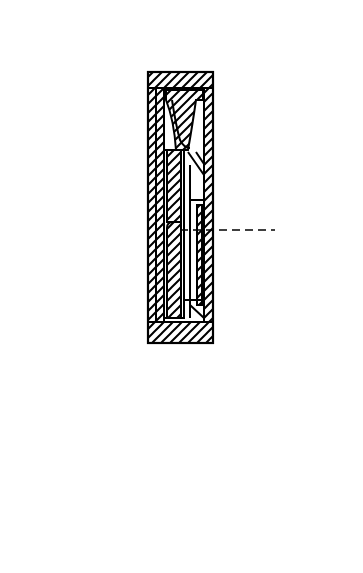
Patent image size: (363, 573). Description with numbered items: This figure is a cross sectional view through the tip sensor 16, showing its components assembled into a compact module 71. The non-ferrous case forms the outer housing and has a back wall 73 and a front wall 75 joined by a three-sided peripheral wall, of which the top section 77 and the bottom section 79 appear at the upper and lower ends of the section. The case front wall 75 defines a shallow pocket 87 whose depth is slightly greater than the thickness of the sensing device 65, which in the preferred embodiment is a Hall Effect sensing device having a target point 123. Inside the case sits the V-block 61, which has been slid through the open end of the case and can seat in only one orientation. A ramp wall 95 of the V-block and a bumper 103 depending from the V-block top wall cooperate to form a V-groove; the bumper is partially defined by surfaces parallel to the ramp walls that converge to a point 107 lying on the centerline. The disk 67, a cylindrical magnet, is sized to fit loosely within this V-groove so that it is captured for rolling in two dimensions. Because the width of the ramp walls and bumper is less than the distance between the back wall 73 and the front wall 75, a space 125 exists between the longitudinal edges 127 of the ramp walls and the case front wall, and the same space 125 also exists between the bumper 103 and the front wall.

The tip sensor 16 is at (118, 200).
The V-block 61 is at (148, 298).
The sensing device 65 is at (212, 270).
The disk 67 is at (168, 260).
The compact module 71 is at (205, 67).
The back wall 73 is at (168, 93).
The front wall 75 is at (207, 113).
The top section 77 is at (152, 74).
The bottom section 79 is at (196, 325).
The shallow pocket 87 is at (210, 197).
The ramp wall 95 is at (149, 215).
The bumper 103 is at (174, 126).
The point 107 is at (168, 150).
The target point 123 is at (255, 230).
The space 125 is at (208, 172).
The longitudinal edges 127 is at (207, 300).